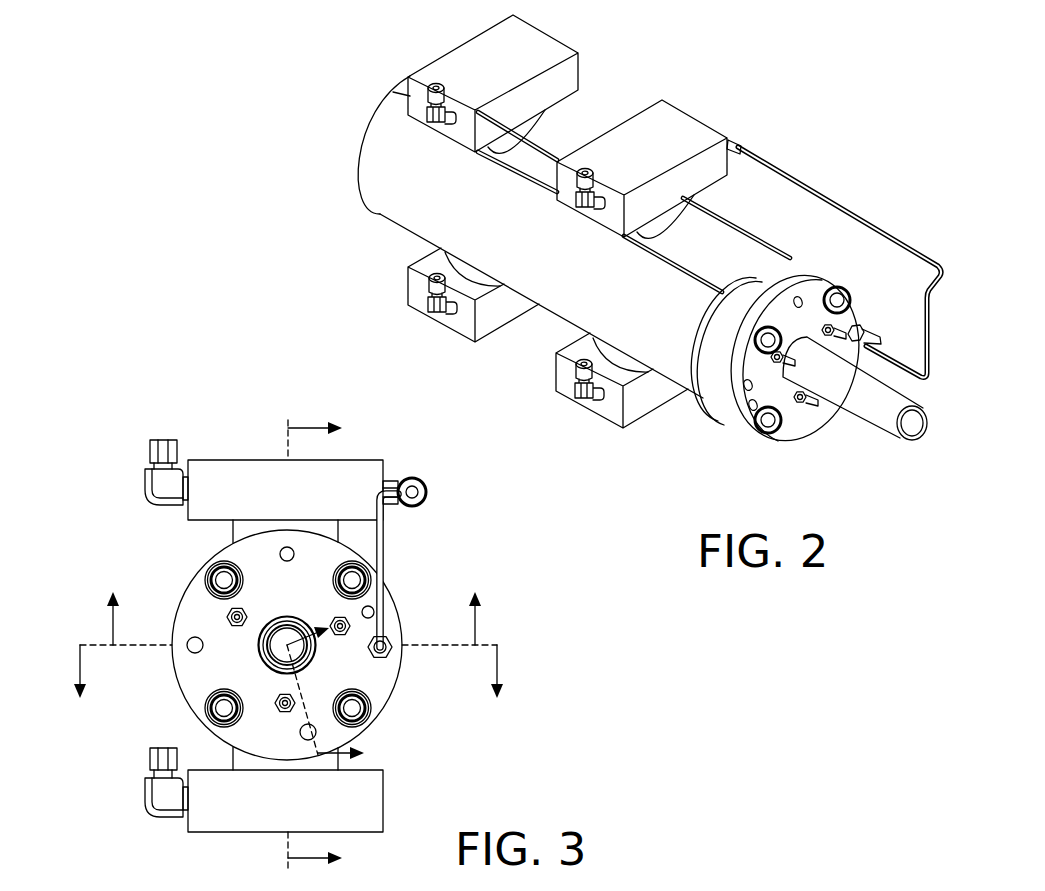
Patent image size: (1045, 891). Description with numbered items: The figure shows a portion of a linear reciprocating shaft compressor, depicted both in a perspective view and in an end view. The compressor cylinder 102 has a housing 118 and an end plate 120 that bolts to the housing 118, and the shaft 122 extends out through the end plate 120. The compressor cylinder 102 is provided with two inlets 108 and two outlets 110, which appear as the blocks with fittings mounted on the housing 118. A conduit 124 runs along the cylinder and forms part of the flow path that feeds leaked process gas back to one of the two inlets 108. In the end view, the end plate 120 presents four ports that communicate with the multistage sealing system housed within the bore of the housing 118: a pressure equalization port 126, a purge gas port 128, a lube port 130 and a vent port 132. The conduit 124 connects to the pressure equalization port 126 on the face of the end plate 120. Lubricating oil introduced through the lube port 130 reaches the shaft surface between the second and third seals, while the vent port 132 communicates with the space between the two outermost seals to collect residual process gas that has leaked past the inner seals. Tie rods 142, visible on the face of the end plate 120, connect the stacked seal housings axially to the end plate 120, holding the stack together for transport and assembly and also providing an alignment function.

In FIG. 2, the compressor cylinder 102 is at (815, 160).
In FIG. 3, the compressor cylinder 102 is at (118, 550).
In FIG. 2, the inlet 108 is at (442, 122).
In FIG. 3, the inlet 108 is at (145, 478).
In FIG. 2, the outlet 110 is at (440, 312).
In FIG. 3, the outlet 110 is at (147, 800).
In FIG. 2, the housing 118 is at (378, 214).
In FIG. 2, the end plate 120 is at (733, 425).
In FIG. 3, the end plate 120 is at (383, 588).
In FIG. 2, the shaft 122 is at (868, 427).
In FIG. 2, the conduit 124 is at (903, 243).
In FIG. 3, the conduit 124 is at (382, 546).
In FIG. 2, the pressure equalization port 126 is at (860, 325).
In FIG. 3, the pressure equalization port 126 is at (390, 658).
In FIG. 3, the purge gas port 128 is at (195, 637).
In FIG. 3, the lube port 130 is at (280, 554).
In FIG. 3, the vent port 132 is at (300, 732).
In FIG. 3, the tie rod 142 is at (275, 703).